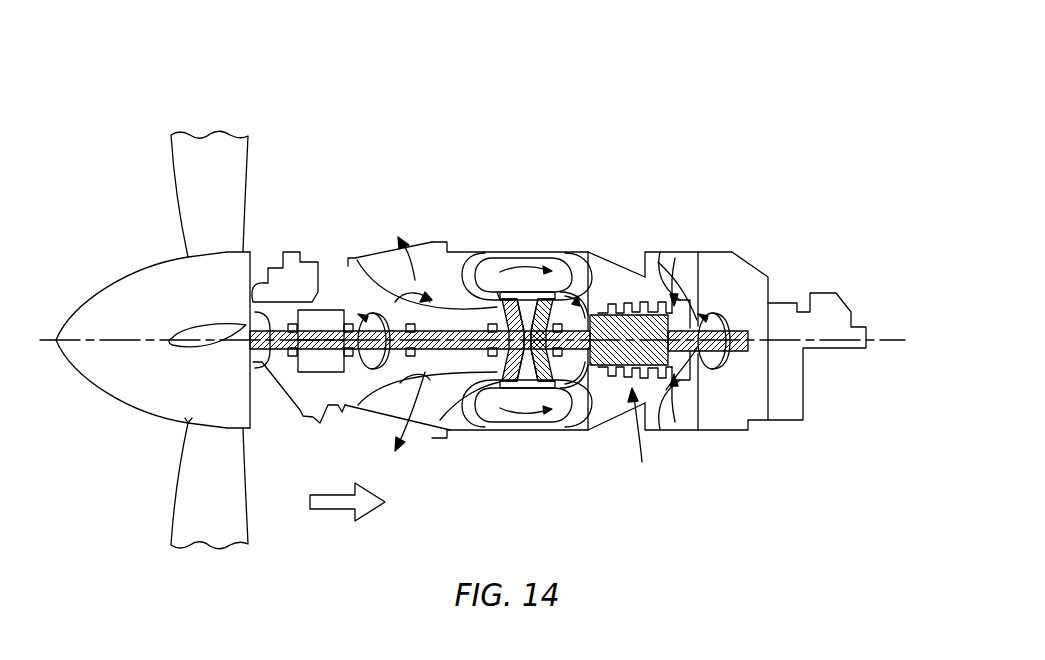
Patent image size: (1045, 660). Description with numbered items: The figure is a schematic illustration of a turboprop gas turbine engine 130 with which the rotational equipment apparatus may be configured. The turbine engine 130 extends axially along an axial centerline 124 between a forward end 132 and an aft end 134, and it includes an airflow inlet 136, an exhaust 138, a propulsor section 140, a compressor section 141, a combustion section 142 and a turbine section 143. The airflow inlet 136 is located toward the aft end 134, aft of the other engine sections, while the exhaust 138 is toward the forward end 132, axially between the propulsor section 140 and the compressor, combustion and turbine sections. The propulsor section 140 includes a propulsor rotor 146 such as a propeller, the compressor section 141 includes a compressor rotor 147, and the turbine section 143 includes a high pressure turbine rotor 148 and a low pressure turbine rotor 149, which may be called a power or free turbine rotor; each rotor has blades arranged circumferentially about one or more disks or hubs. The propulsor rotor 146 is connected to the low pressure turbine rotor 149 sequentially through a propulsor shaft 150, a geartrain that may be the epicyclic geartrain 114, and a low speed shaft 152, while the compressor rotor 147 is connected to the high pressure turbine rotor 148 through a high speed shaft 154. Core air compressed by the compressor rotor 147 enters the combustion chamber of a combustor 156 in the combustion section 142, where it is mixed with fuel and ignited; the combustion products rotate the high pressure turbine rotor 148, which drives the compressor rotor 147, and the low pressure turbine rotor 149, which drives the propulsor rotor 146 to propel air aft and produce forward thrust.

The epicyclic geartrain 114 is at (328, 306).
The axial centerline 124 is at (897, 346).
The turboprop gas turbine engine 130 is at (529, 148).
The forward end 132 is at (58, 345).
The aft end 134 is at (866, 332).
The airflow inlet 136 is at (686, 250).
The exhaust 138 is at (418, 250).
The propulsor section 140 is at (211, 108).
The compressor section 141 is at (660, 372).
The combustion section 142 is at (495, 270).
The turbine section 143 is at (532, 258).
The propulsor rotor 146 is at (185, 430).
The compressor rotor 147 is at (633, 278).
The high pressure turbine rotor 148 is at (553, 392).
The low pressure turbine rotor 149 is at (492, 395).
The propulsor shaft 150 is at (250, 308).
The low speed shaft 152 is at (365, 310).
The high speed shaft 154 is at (590, 422).
The combustor 156 is at (565, 280).